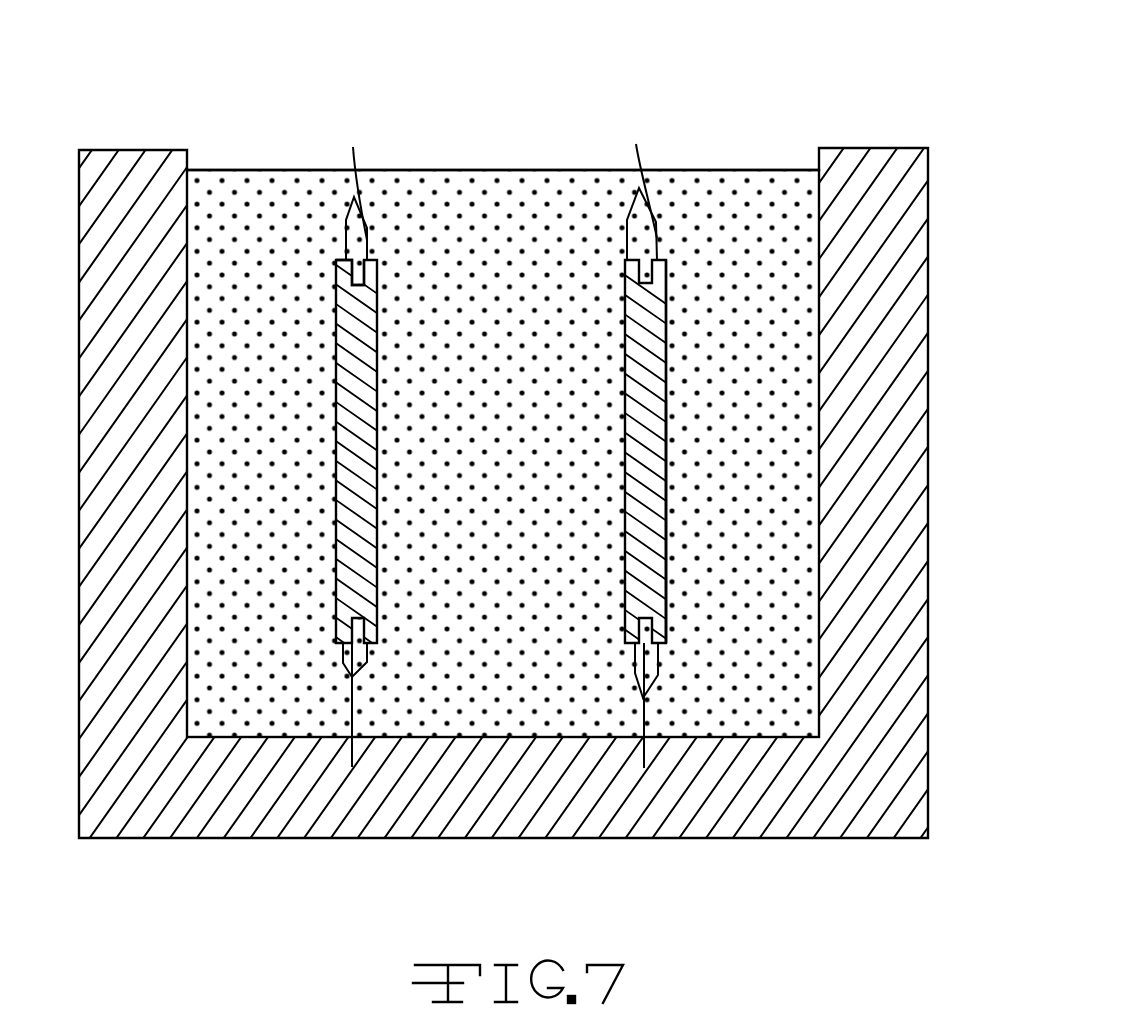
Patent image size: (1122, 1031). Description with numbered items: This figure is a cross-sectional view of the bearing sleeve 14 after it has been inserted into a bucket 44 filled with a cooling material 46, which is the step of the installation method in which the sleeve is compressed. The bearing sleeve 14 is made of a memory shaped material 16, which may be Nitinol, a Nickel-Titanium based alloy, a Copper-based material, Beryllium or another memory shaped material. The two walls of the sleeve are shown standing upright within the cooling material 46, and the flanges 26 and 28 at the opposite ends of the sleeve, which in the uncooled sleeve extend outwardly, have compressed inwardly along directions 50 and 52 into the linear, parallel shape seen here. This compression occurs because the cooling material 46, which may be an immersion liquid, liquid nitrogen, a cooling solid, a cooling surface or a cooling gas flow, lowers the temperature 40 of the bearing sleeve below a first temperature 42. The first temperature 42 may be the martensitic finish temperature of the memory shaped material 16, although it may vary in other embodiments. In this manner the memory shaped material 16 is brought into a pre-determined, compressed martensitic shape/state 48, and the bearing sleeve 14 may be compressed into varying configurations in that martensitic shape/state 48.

The bearing sleeve 14 is at (666, 363).
The memory shaped material 16 is at (666, 446).
The flange 26 is at (501, 188).
The flange 28 is at (496, 723).
The temperature 40 is at (336, 278).
The first temperature 42 is at (338, 283).
The bucket 44 is at (862, 148).
The cooling material 46 is at (723, 202).
The martensitic shape/state 48 is at (666, 522).
The direction 50 is at (316, 275).
The direction 52 is at (593, 275).